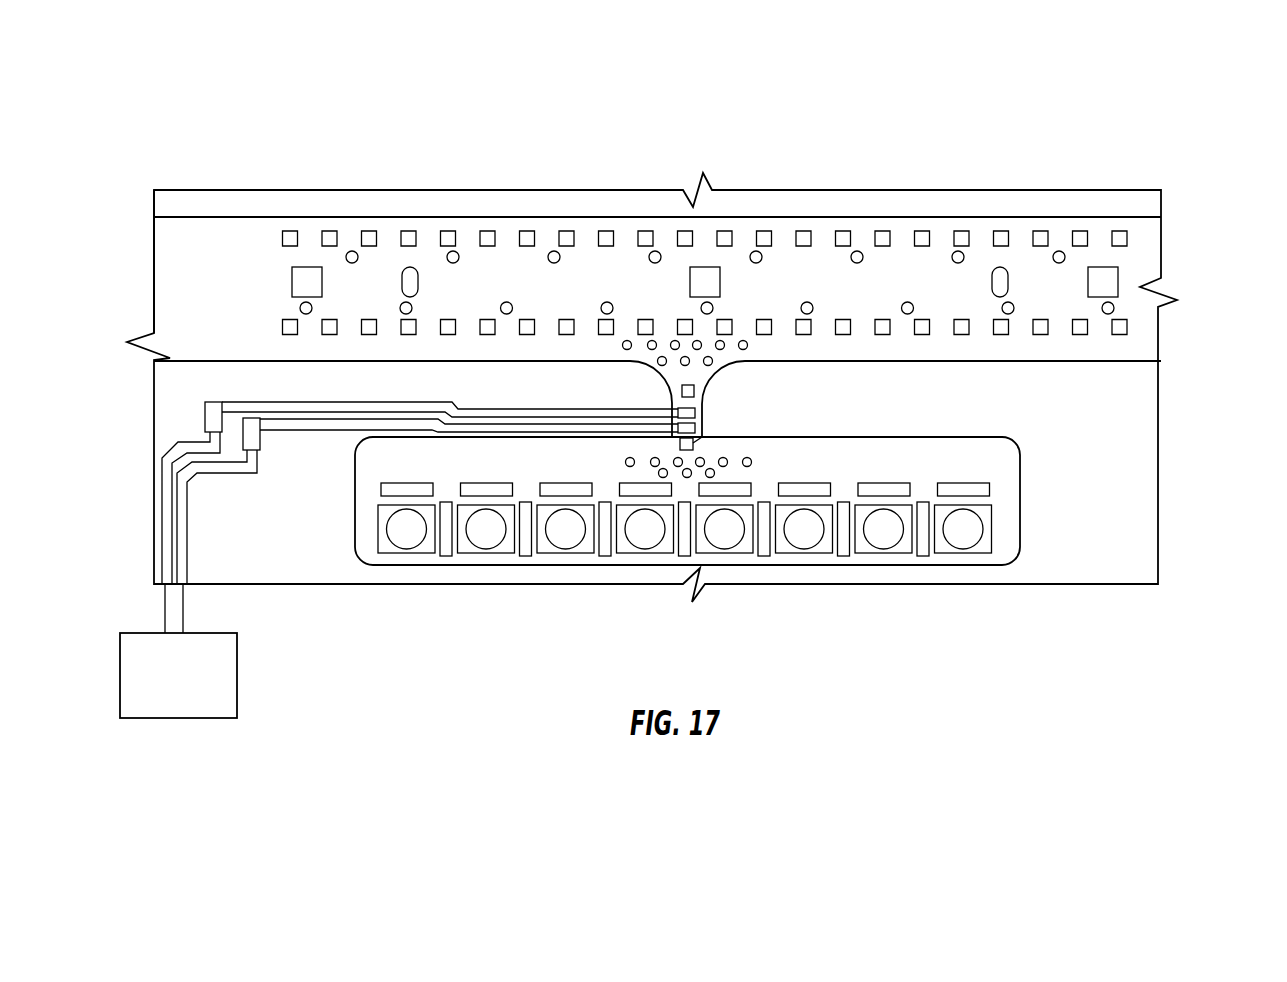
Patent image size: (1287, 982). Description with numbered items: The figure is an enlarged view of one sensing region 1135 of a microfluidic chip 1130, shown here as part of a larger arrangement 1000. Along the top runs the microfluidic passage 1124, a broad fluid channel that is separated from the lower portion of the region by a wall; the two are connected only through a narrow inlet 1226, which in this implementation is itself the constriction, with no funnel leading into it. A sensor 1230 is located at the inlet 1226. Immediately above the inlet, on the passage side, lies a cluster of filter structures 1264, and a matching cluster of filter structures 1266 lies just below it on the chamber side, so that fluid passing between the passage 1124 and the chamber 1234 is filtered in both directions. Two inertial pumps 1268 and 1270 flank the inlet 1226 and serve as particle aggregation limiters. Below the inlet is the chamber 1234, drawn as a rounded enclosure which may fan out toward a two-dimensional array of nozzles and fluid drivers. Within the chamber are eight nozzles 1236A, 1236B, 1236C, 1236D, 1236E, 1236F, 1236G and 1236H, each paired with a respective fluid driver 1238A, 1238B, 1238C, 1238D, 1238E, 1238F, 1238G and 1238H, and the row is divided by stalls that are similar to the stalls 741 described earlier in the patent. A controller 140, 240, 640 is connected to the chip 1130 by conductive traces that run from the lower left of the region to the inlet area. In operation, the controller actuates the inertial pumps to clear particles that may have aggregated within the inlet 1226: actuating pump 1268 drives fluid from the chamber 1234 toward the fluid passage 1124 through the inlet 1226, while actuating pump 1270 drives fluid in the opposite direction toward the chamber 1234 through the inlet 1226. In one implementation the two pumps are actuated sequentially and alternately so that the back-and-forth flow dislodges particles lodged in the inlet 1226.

The lighting system 1000 is at (1064, 137).
The chip 1130 is at (206, 126).
The sensing region 1135 is at (153, 172).
The microfluidic passage 1124 is at (1143, 213).
The filter structures 1264 is at (627, 340).
The filter structures 1266 is at (627, 459).
The inertial pump 1268 is at (665, 381).
The inlet 1226 is at (727, 381).
The sensor 1230 is at (702, 409).
The inertial pump 1270 is at (703, 437).
The stalls 741 is at (968, 482).
The chamber 1234 is at (1022, 497).
The nozzle 1236A is at (387, 523).
The nozzle 1236B is at (483, 550).
The nozzle 1236C is at (572, 550).
The nozzle 1236D is at (655, 550).
The nozzle 1236E is at (738, 552).
The nozzle 1236F is at (806, 550).
The nozzle 1236G is at (886, 550).
The nozzle 1236H is at (984, 526).
The fluid driver 1238A is at (388, 556).
The fluid driver 1238B is at (514, 556).
The fluid driver 1238C is at (543, 556).
The fluid driver 1238D is at (662, 556).
The fluid driver 1238E is at (713, 556).
The fluid driver 1238F is at (792, 556).
The fluid driver 1238G is at (870, 556).
The fluid driver 1238H is at (983, 556).
The controller 140 is at (258, 686).
The controller 240 is at (178, 675).
The controller 640 is at (238, 665).